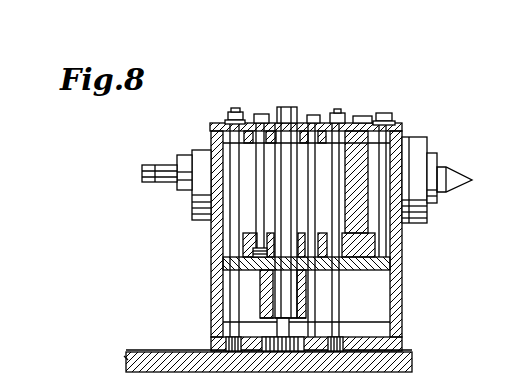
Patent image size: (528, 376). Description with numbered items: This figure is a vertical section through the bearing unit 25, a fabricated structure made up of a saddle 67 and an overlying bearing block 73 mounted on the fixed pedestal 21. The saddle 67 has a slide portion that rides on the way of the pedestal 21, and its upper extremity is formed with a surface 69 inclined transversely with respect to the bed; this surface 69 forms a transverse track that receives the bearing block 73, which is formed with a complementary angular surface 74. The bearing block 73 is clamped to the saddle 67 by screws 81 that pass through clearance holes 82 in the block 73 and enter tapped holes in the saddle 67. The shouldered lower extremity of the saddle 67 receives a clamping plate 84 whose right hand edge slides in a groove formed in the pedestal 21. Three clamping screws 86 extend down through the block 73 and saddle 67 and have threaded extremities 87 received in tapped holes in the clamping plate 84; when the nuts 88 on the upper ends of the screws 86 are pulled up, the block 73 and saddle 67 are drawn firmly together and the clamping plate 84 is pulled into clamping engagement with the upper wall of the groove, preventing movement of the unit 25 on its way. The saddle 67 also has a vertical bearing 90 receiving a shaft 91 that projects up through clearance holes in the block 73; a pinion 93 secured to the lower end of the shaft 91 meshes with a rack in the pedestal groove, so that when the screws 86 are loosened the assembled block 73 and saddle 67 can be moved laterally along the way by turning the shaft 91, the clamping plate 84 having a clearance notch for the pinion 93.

The fixed pedestal 21 is at (255, 352).
The bearing unit 25 is at (190, 230).
The saddle 67 is at (329, 230).
The surface 69 is at (396, 194).
The bearing block 73 is at (300, 247).
The complementary angular surface 74 is at (435, 205).
The screws 81 is at (263, 121).
The clearance holes 82 is at (207, 264).
The clamping plate 84 is at (327, 352).
The clamping screws 86 is at (416, 96).
The threaded extremities 87 is at (222, 343).
The nuts 88 is at (227, 118).
The vertical bearing 90 is at (218, 222).
The shaft 91 is at (313, 294).
The pinion 93 is at (314, 328).